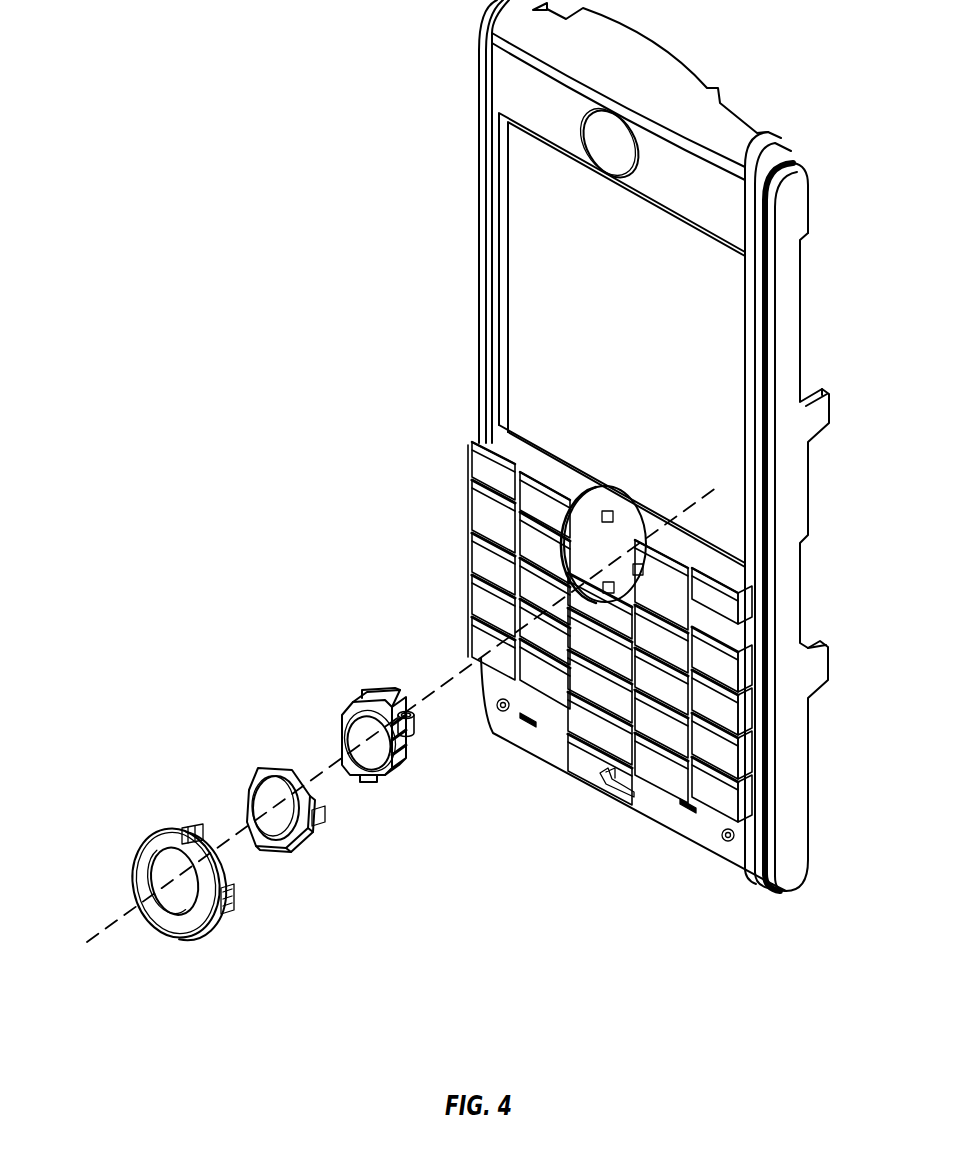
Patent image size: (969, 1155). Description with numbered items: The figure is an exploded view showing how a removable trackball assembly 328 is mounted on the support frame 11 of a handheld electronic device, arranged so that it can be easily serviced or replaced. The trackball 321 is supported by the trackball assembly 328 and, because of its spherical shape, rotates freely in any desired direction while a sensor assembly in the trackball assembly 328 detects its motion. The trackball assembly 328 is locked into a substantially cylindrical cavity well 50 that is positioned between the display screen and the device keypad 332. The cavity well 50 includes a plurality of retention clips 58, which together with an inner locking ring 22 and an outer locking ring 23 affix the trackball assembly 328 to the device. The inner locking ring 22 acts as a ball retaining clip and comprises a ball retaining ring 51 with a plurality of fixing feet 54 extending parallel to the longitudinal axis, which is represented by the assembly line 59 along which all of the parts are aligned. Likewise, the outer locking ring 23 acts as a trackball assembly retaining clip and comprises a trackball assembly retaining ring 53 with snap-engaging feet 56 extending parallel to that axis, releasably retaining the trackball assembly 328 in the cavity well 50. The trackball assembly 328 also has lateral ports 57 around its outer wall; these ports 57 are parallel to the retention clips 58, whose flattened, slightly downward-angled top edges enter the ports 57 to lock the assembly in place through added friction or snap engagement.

The support frame 11 is at (808, 588).
The inner locking ring 22 is at (248, 762).
The outer locking ring 23 is at (128, 818).
The cavity well 50 is at (605, 537).
The ball retaining ring 51 is at (298, 845).
The trackball assembly retaining ring 53 is at (182, 940).
The fixing feet 54 is at (328, 818).
The snap-engaging feet 56 is at (238, 902).
The lateral ports 57 is at (432, 750).
The retention clips 58 is at (585, 502).
The assembly line 59 is at (110, 922).
The trackball 321 is at (364, 752).
The trackball assembly 328 is at (342, 690).
The keypad 332 is at (485, 557).